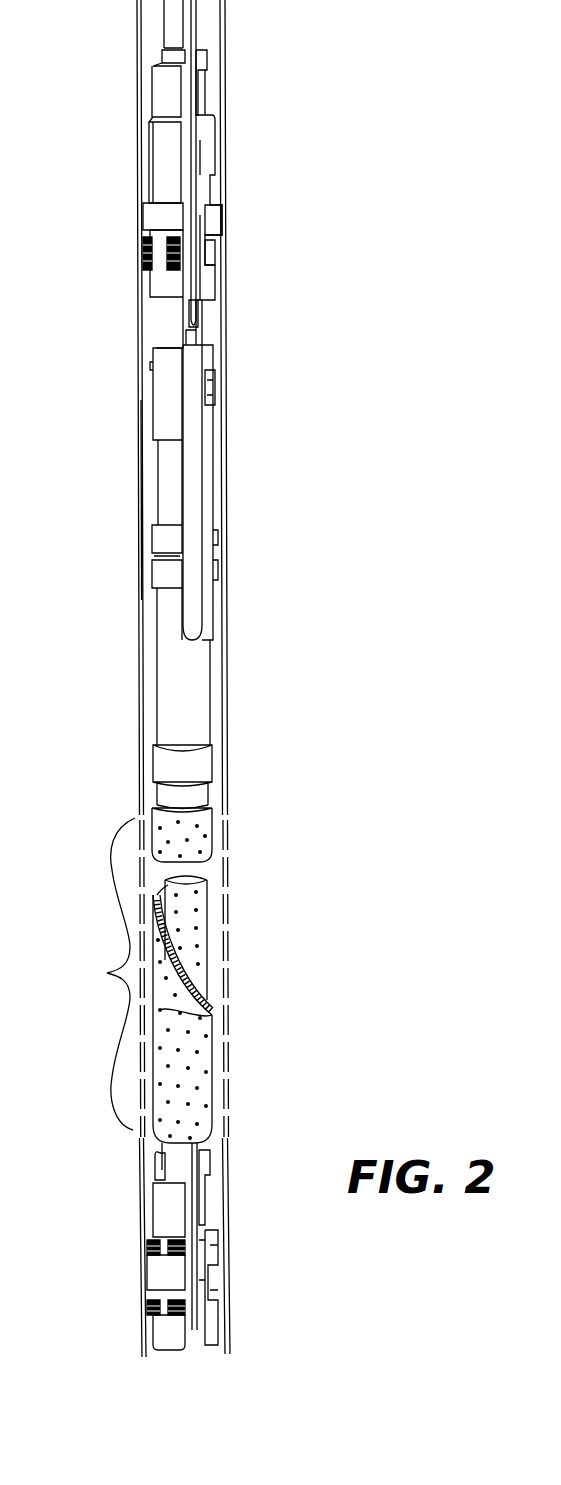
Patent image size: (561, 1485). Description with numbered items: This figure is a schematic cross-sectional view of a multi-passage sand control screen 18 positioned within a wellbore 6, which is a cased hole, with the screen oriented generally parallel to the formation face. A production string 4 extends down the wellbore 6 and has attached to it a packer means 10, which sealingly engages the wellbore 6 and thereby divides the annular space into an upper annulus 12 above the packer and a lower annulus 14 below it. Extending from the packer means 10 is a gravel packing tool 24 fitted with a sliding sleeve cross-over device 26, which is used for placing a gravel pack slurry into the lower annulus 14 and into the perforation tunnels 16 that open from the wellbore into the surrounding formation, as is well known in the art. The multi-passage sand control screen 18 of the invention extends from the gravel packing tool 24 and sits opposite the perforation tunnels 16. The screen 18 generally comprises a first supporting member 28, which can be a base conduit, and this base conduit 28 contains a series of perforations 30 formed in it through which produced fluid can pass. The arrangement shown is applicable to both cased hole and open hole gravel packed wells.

The production string 4 is at (195, 23).
The wellbore 6 is at (137, 88).
The packer means 10 is at (217, 216).
The upper annulus 12 is at (148, 45).
The lower annulus 14 is at (148, 492).
The perforation tunnels 16 is at (107, 973).
The multi-passage sand control screen 18 is at (210, 772).
The gravel packing tool 24 is at (212, 392).
The sliding sleeve cross-over device 26 is at (197, 318).
The first supporting member 28 is at (204, 880).
The perforations 30 is at (202, 902).